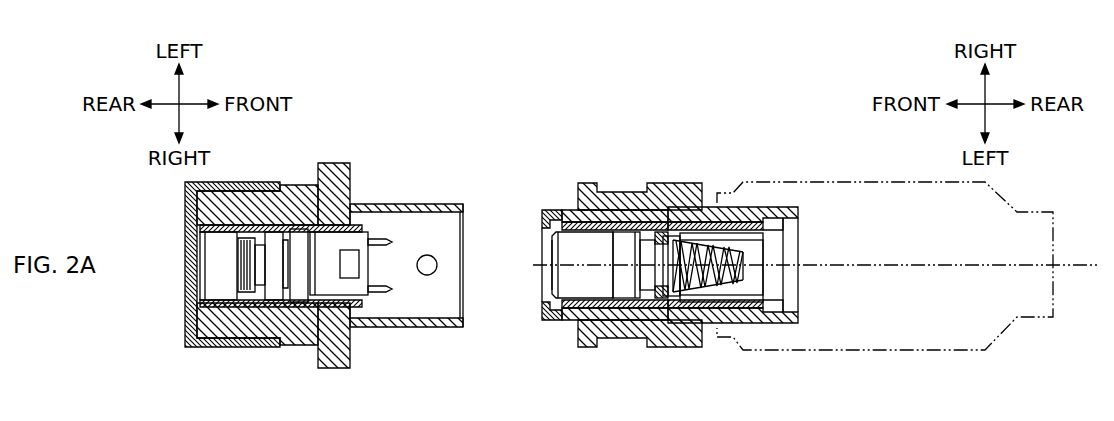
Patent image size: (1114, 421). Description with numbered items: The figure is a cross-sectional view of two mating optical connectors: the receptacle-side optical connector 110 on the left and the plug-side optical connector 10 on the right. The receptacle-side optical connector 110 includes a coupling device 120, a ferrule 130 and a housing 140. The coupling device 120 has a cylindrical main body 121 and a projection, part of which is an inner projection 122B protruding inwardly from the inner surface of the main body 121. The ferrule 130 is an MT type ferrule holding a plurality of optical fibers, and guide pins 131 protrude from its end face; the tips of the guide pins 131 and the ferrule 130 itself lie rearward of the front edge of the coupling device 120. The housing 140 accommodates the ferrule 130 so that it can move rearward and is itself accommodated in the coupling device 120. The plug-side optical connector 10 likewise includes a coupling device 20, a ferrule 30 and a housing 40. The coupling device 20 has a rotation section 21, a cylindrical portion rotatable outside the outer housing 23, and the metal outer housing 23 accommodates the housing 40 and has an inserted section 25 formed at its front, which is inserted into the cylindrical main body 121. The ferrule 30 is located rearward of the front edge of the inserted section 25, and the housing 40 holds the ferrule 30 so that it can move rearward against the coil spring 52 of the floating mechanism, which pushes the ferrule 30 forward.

The receptacle-side optical connector 110 is at (326, 106).
The receptacle-side coupling device 120 is at (379, 163).
The cylindrical main body 121 is at (412, 202).
The inner projection 122B is at (432, 255).
The receptacle-side ferrule 130 is at (358, 291).
The guide pins 131 is at (394, 289).
The housing 140 is at (350, 307).
The plug-side optical connector 10 is at (656, 104).
The plug-side coupling device 20 is at (653, 137).
The inserted section 25 is at (543, 208).
The rotation section 21 is at (589, 182).
The outer housing 23 is at (712, 207).
The plug-side ferrule 30 is at (562, 292).
The housing 40 is at (605, 300).
The coil spring 52 is at (707, 284).